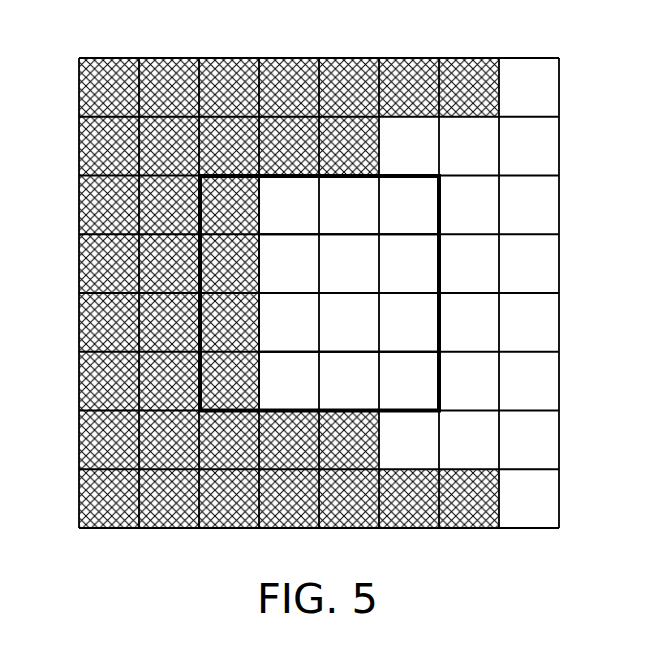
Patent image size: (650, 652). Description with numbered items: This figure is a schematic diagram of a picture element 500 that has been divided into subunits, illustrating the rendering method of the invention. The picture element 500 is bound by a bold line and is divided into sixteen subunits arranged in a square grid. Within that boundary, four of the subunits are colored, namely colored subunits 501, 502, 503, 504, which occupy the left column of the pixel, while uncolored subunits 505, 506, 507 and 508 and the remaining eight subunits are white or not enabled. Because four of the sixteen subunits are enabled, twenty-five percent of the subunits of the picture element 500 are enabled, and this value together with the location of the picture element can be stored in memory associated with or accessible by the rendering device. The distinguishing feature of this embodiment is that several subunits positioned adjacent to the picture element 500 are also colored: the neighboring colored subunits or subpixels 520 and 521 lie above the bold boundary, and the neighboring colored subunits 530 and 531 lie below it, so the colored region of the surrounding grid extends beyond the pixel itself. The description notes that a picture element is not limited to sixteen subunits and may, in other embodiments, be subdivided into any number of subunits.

The picture element 500 is at (420, 196).
The colored subunit 501 is at (215, 208).
The colored subunit 502 is at (215, 266).
The colored subunit 503 is at (215, 325).
The colored subunit 504 is at (215, 382).
The uncolored subunit 505 is at (307, 203).
The uncolored subunit 506 is at (307, 262).
The uncolored subunit 507 is at (307, 321).
The uncolored subunit 508 is at (307, 379).
The colored neighboring subunit 520 is at (267, 158).
The colored neighboring subunit 521 is at (379, 145).
The colored neighboring subunit 530 is at (267, 427).
The colored neighboring subunit 531 is at (373, 427).